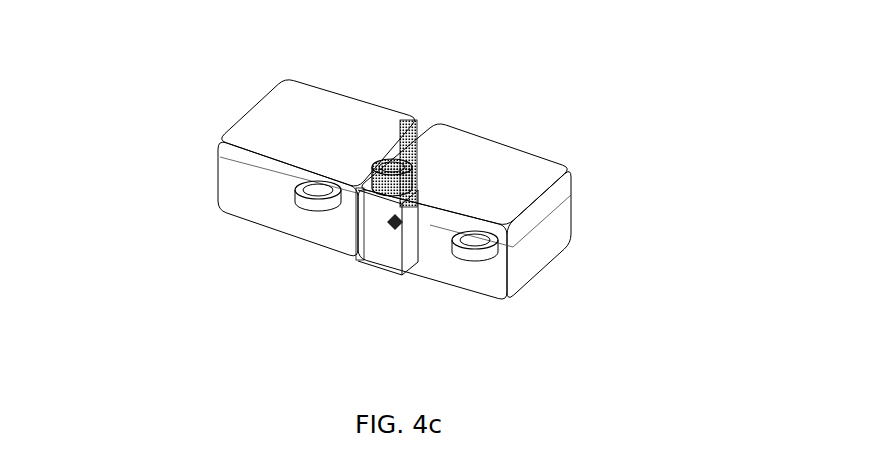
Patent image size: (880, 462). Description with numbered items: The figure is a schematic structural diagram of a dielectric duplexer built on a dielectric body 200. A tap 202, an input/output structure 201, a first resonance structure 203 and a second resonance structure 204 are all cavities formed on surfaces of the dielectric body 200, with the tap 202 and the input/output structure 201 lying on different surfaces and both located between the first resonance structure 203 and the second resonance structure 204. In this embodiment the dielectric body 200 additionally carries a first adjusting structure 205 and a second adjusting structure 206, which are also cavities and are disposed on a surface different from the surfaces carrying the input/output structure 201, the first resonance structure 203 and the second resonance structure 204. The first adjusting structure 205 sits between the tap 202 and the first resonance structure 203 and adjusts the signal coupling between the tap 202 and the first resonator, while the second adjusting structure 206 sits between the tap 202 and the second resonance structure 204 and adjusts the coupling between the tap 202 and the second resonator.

The dielectric body 200 is at (260, 105).
The input/output structure 201 is at (395, 208).
The tap 202 is at (387, 155).
The first resonance structure 203 is at (302, 192).
The second resonance structure 204 is at (498, 245).
The first adjusting structure 205 is at (360, 222).
The second adjusting structure 206 is at (410, 140).